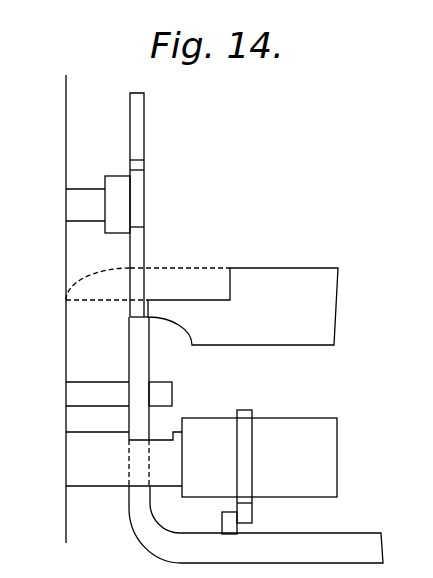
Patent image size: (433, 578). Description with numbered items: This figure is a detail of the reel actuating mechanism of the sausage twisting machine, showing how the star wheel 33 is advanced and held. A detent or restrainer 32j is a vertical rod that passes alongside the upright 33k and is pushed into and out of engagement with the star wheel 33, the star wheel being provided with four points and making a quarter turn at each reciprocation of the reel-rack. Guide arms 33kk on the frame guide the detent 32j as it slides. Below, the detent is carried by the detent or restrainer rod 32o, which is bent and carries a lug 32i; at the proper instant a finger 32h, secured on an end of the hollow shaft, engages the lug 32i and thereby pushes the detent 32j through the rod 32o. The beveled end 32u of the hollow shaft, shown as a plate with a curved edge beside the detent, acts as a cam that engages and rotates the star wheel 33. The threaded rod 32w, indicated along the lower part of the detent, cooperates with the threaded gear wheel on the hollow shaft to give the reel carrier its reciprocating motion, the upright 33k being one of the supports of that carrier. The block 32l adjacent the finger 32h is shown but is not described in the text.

The star wheel 33 is at (144, 184).
The upright 33k is at (66, 334).
The guide arms 33kk is at (119, 394).
The detent 32j is at (130, 340).
The beveled end of hollow shaft 32u is at (149, 300).
The threaded rod 32w is at (124, 401).
The box 32l is at (259, 457).
The finger 32h is at (253, 513).
The lug 32i is at (222, 520).
The detent rod 32o is at (256, 524).